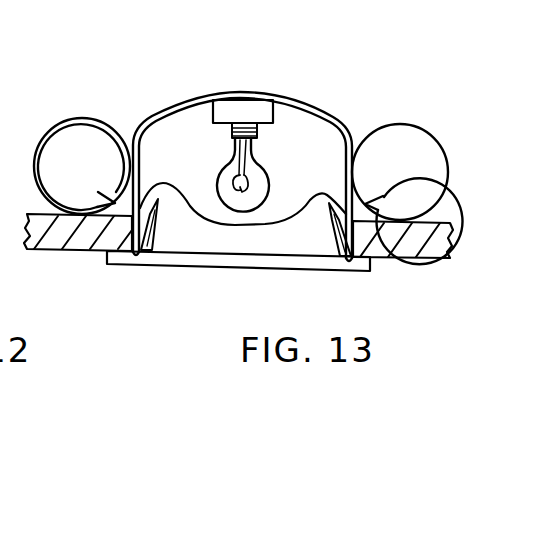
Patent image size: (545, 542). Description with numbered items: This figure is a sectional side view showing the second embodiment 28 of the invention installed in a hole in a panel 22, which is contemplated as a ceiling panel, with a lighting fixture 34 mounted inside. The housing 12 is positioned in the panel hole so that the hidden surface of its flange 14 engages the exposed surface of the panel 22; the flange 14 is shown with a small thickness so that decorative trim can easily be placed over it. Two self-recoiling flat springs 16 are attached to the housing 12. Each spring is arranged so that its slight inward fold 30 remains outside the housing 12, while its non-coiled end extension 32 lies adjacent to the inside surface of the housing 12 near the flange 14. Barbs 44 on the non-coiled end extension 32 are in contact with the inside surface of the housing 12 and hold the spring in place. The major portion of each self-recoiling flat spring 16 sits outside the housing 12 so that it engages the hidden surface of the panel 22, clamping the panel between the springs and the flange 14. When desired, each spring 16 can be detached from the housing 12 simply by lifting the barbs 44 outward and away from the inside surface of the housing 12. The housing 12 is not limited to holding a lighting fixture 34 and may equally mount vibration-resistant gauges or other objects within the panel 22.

The housing 12 is at (322, 122).
The flange 14 is at (362, 268).
The self-recoiling flat spring 16 is at (82, 119).
The panel 22 is at (451, 248).
The second embodiment 28 is at (430, 92).
The slight inward fold 30 is at (90, 187).
The non-coiled end extension 32 is at (158, 243).
The lighting fixture 34 is at (251, 110).
The barbs 44 is at (228, 226).